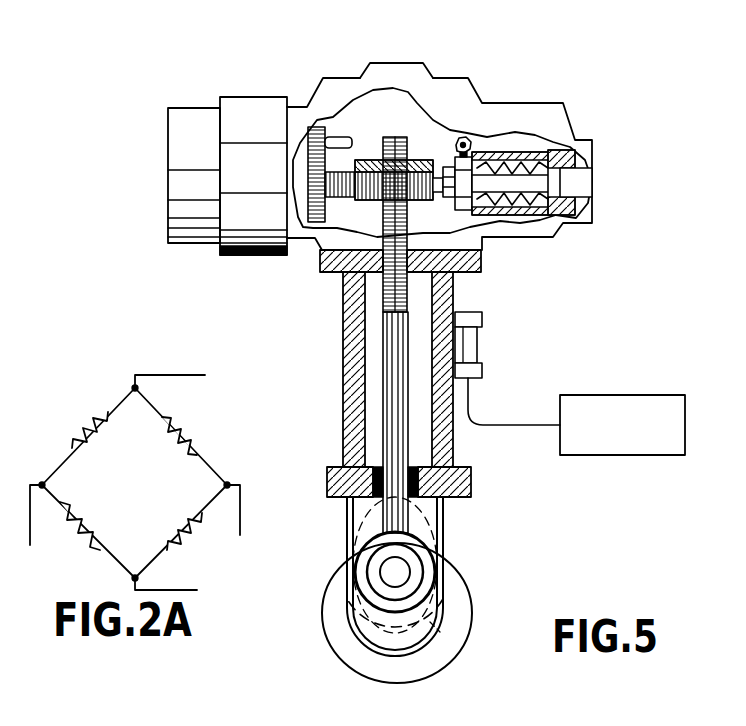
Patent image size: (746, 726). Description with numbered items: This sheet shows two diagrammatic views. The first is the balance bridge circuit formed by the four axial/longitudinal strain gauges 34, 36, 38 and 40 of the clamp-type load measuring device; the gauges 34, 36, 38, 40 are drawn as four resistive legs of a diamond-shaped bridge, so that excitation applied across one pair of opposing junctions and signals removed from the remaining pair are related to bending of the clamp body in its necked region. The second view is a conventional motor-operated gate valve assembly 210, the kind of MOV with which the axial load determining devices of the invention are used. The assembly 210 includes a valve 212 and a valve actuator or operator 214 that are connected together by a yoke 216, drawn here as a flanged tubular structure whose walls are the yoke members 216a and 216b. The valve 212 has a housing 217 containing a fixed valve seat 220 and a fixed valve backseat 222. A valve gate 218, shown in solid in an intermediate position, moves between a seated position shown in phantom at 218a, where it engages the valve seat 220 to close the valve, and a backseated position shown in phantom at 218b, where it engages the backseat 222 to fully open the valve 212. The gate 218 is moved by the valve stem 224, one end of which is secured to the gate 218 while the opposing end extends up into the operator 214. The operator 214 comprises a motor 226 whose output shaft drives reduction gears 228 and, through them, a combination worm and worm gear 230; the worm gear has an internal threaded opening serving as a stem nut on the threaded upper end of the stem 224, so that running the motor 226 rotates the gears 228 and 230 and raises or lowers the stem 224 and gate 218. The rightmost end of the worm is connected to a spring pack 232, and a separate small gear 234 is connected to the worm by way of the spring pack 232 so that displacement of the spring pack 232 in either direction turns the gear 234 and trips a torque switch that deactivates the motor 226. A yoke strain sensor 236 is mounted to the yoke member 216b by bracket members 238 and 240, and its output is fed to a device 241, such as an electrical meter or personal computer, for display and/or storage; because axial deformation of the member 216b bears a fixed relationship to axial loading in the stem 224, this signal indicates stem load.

In FIG. 2A, the strain gauge 34 is at (68, 528).
In FIG. 2A, the strain gauge 36 is at (186, 432).
In FIG. 2A, the strain gauge 38 is at (184, 533).
In FIG. 2A, the strain gauge 40 is at (78, 432).
In FIG. 5, the motor-operated gate valve assembly 210 is at (383, 58).
In FIG. 5, the valve 212 is at (480, 590).
In FIG. 5, the valve actuator or operator 214 is at (339, 70).
In FIG. 5, the yoke 216 is at (468, 279).
In FIG. 5, the yoke member 216a is at (347, 355).
In FIG. 5, the yoke member 216b is at (455, 432).
In FIG. 5, the housing 217 is at (365, 598).
In FIG. 5, the valve gate 218 is at (383, 572).
In FIG. 5, the seated position of valve gate 218a is at (458, 637).
In FIG. 5, the backseated position of valve gate 218b is at (373, 520).
In FIG. 5, the valve seat 220 is at (363, 633).
In FIG. 5, the valve backseat 222 is at (472, 483).
In FIG. 5, the valve stem 224 is at (387, 422).
In FIG. 5, the motor 226 is at (249, 112).
In FIG. 5, the reduction gears 228 is at (313, 128).
In FIG. 5, the worm and worm gear 230 is at (409, 137).
In FIG. 5, the spring pack 232 is at (510, 150).
In FIG. 5, the small gear 234 is at (464, 136).
In FIG. 5, the yoke strain sensor 236 is at (474, 342).
In FIG. 5, the bracket member 238 is at (478, 317).
In FIG. 5, the bracket member 240 is at (482, 372).
In FIG. 5, the display and/or storage device 241 is at (658, 396).